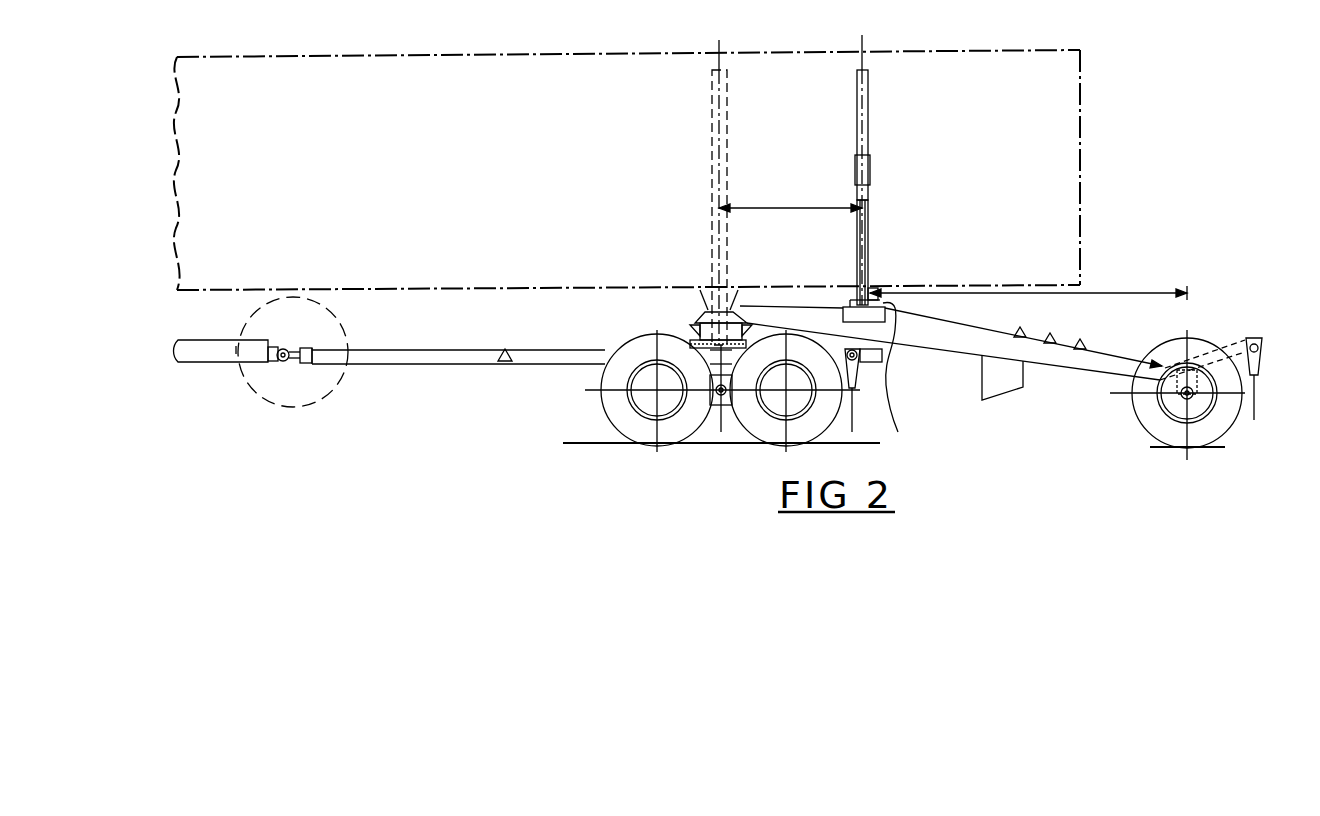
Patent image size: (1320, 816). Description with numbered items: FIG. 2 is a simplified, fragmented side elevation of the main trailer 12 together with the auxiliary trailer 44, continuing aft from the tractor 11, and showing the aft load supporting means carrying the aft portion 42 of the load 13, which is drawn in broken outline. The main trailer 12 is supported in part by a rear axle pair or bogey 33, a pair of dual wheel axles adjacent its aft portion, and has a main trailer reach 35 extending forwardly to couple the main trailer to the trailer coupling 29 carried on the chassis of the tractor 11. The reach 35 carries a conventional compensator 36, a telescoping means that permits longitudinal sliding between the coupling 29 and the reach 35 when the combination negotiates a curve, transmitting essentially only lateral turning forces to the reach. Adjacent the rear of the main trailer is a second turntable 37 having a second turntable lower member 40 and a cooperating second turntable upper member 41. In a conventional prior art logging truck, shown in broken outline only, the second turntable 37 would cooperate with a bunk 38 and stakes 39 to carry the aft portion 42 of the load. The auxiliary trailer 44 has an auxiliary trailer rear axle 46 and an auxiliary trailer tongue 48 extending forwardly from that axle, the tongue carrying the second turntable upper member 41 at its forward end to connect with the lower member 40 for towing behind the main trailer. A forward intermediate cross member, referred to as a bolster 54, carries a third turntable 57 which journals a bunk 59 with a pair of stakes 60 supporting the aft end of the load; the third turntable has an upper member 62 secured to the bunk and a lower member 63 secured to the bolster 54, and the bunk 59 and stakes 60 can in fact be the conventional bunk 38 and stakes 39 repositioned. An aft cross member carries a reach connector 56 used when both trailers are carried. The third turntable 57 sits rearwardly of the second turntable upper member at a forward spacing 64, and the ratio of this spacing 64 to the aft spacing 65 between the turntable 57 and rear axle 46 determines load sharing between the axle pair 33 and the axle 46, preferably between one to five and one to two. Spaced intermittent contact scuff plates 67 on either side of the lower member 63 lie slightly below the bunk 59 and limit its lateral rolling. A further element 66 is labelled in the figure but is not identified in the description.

The tractor 11 is at (217, 356).
The main trailer 12 is at (487, 277).
The load 13 is at (985, 48).
The trailer coupling 29 is at (280, 363).
The rear axle pair or bogey 33 is at (635, 462).
The main trailer reach 35 is at (455, 349).
The compensator 36 is at (312, 345).
The second turntable 37 is at (693, 313).
The bunk 38 is at (730, 297).
The stakes 39 is at (717, 167).
The second turntable lower member 40 is at (665, 330).
The second turntable upper member 41 is at (700, 330).
The aft portion of the load 42 is at (1083, 143).
The auxiliary trailer 44 is at (1105, 278).
The auxiliary trailer rear axle 46 is at (1200, 325).
The auxiliary trailer tongue 48 is at (912, 338).
The bolster 54 is at (860, 318).
The reach connector 56 is at (1003, 393).
The third turntable 57 is at (810, 252).
The bunk 59 is at (870, 290).
The stakes 60 is at (868, 232).
The third turntable upper member 62 is at (810, 252).
The third turntable lower member 63 is at (848, 290).
The forward spacing 64 is at (770, 207).
The aft spacing 65 is at (1028, 304).
The curved guide member 66 is at (918, 372).
The intermittent contact scuff plates 67 is at (918, 372).